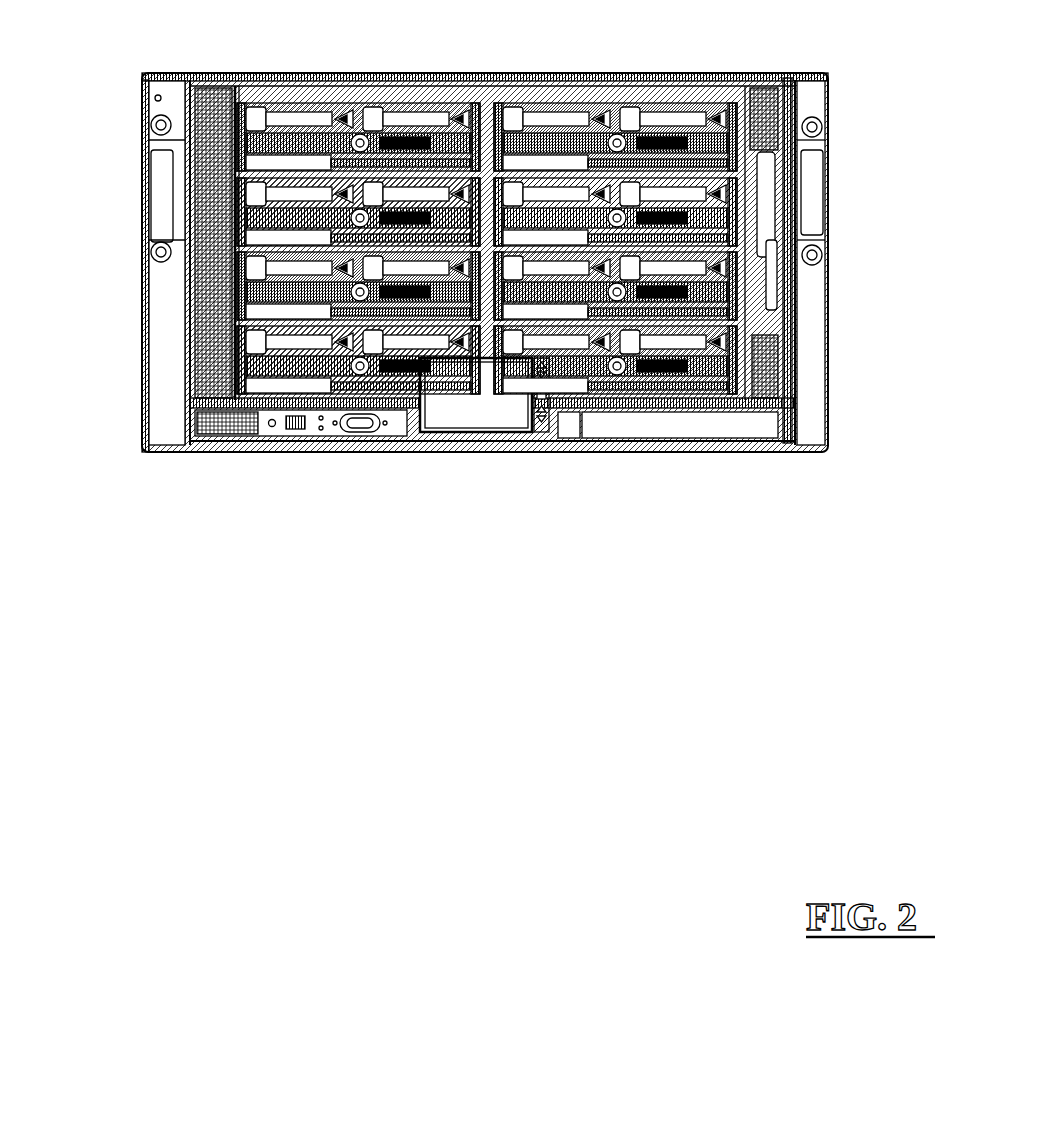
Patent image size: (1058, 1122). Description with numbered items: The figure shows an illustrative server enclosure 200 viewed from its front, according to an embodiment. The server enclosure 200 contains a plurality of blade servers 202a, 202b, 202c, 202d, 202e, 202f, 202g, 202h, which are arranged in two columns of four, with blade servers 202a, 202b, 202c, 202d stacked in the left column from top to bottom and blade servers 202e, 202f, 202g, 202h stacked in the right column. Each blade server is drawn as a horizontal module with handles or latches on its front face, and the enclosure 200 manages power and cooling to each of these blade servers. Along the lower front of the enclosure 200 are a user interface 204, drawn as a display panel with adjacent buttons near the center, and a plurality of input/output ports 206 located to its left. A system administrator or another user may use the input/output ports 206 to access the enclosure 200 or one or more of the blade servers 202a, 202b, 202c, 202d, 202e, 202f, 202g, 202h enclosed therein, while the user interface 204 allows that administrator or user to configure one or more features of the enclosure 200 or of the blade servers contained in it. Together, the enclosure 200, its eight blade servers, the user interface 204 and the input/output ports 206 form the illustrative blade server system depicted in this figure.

The server enclosure 200 is at (512, 692).
The blade server 202a is at (287, 112).
The blade server 202b is at (260, 222).
The blade server 202c is at (400, 277).
The blade server 202d is at (278, 365).
The blade server 202e is at (693, 122).
The blade server 202f is at (718, 208).
The blade server 202g is at (718, 290).
The blade server 202h is at (697, 363).
The user interface 204 is at (489, 420).
The input/output ports 206 is at (280, 420).